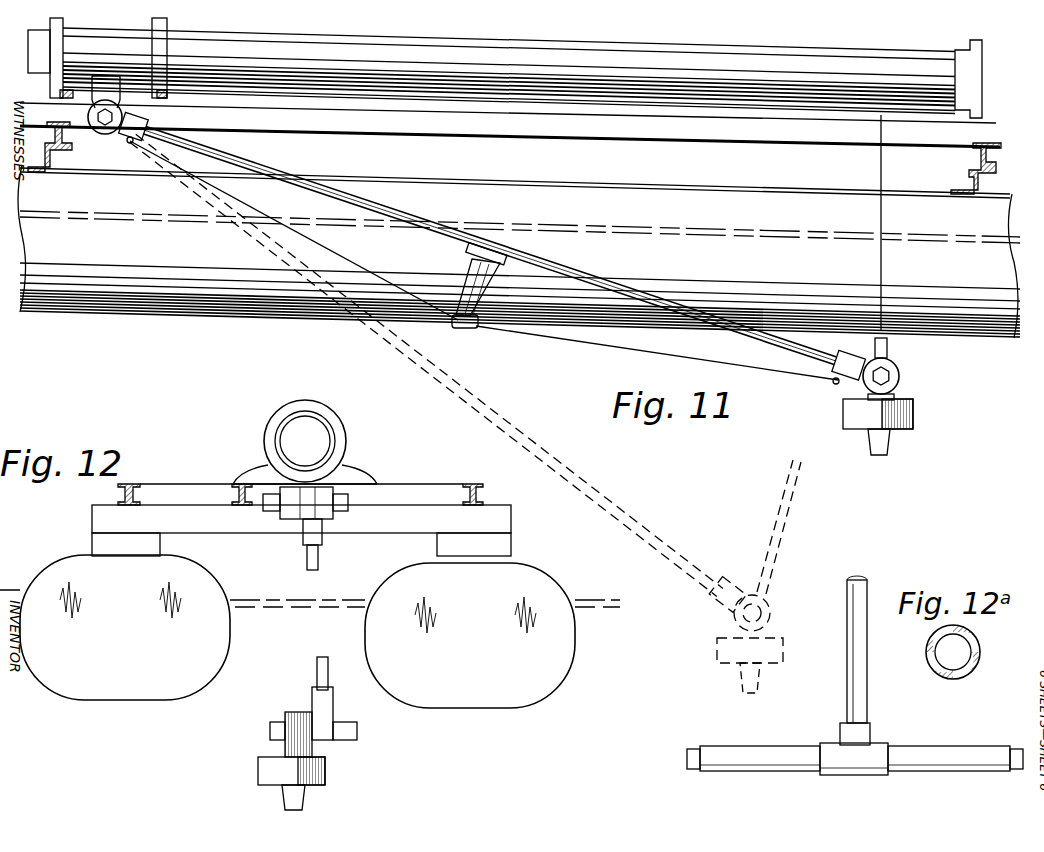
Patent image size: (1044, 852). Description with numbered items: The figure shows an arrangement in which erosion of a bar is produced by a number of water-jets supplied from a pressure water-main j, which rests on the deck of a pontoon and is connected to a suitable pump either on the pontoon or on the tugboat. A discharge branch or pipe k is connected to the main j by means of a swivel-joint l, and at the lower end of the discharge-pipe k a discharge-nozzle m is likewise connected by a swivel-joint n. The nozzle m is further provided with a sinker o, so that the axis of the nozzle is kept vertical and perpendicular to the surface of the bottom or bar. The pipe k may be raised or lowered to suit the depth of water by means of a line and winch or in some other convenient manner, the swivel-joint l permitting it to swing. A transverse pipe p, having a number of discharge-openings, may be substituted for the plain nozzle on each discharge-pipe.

In FIG. 11, the pressure water-main j is at (505, 68).
In FIG. 12, the pressure water-main j is at (336, 422).
In FIG. 11, the discharge-pipe k is at (492, 362).
In FIG. 12, the discharge-pipe k is at (304, 570).
In FIG. 11, the swivel-joint l is at (100, 133).
In FIG. 12, the swivel-joint l is at (276, 520).
In FIG. 11, the discharge-nozzle m is at (892, 449).
In FIG. 12, the discharge-nozzle m is at (304, 806).
In FIG. 11, the swivel-joint n is at (824, 484).
In FIG. 12, the swivel-joint n is at (308, 712).
In FIG. 11, the sinker o is at (914, 413).
In FIG. 12, the sinker o is at (326, 771).
In FIG. 12a, the transverse pipe p is at (930, 752).